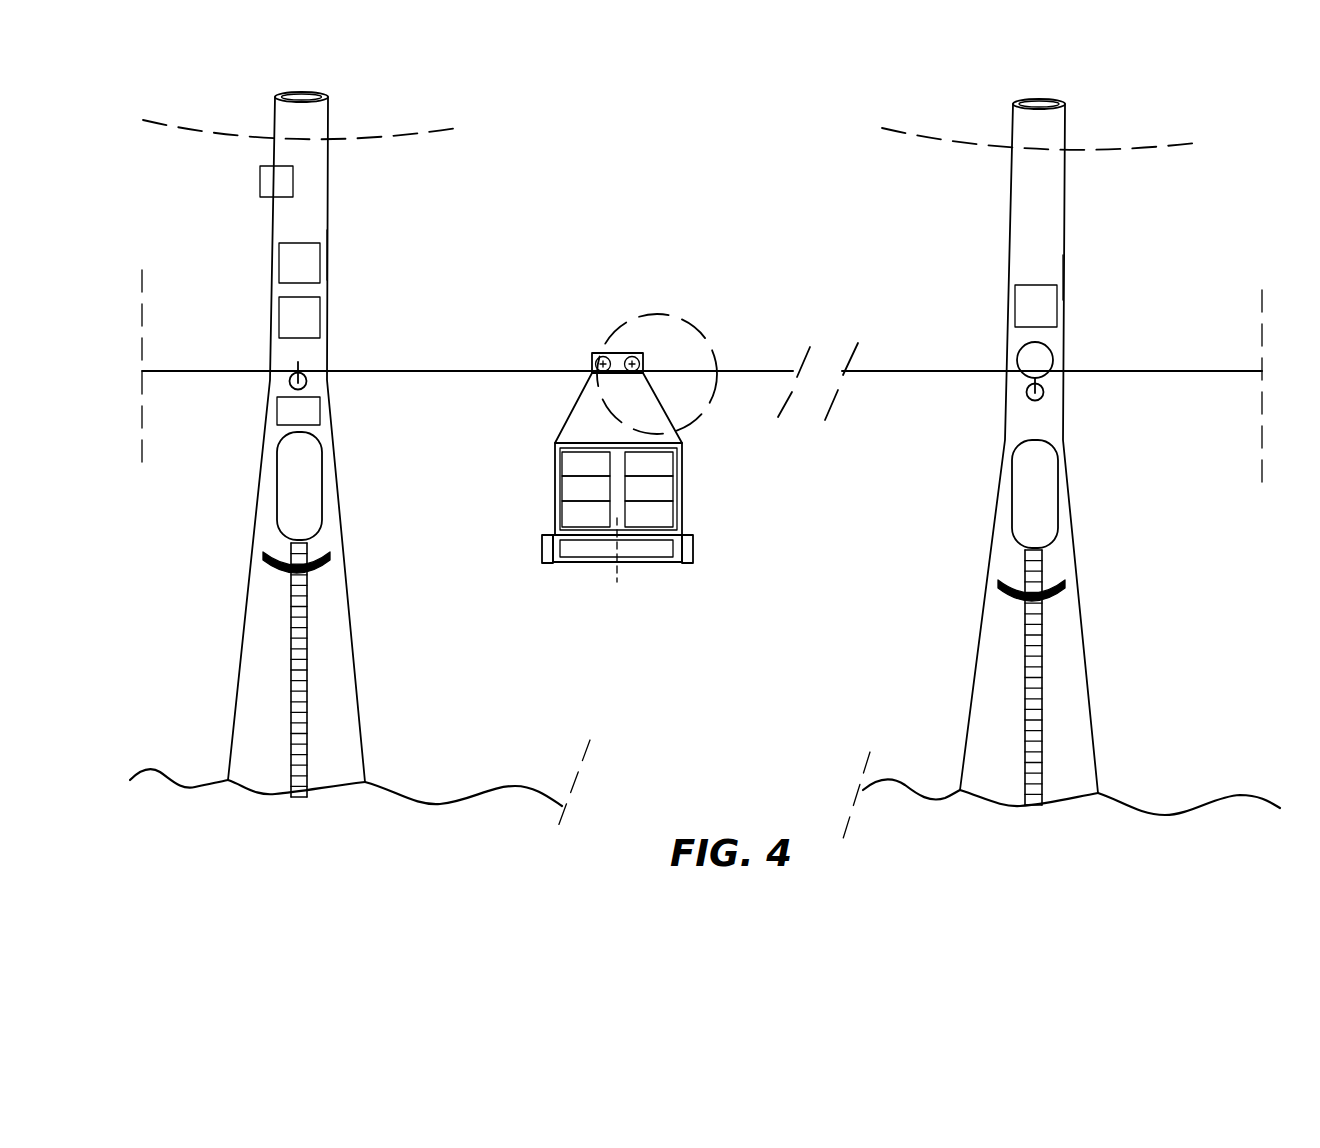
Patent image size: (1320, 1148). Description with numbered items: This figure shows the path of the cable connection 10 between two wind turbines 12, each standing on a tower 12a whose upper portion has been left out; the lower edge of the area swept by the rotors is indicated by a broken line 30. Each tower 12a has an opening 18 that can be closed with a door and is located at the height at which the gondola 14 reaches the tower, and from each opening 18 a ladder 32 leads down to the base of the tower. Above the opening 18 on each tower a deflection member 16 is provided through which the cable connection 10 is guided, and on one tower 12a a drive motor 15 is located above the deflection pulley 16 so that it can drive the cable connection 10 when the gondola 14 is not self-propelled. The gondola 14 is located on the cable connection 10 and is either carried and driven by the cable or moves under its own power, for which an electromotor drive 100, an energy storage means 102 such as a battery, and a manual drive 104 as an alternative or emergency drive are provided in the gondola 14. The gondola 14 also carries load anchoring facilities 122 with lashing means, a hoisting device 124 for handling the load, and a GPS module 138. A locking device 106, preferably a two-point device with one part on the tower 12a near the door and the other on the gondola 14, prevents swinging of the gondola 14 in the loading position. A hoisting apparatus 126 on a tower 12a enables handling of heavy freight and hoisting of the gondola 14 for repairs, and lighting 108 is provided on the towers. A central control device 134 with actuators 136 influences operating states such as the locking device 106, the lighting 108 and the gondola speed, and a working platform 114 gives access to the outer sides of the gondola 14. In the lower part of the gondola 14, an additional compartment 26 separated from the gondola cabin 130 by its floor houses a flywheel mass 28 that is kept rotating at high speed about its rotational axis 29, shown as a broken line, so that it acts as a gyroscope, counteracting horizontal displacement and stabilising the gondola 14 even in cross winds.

The cable connection 10 is at (487, 371).
The wind turbine 12 is at (358, 194).
The tower 12a is at (328, 257).
The gondola 14 is at (518, 465).
The drive motor 15 is at (1054, 361).
The deflection member 16 is at (702, 395).
The opening 18 is at (667, 490).
The additional compartment 26 is at (672, 563).
The flywheel mass 28 is at (587, 557).
The center line 29 is at (617, 566).
The broken line 30 is at (669, 129).
The ladder 32 is at (300, 731).
The electromotor drive 100 is at (586, 464).
The energy storage means 102 is at (586, 488).
The manual drive 104 is at (586, 514).
The locking device 106 is at (542, 548).
The lighting 108 is at (667, 355).
The working platform 114 is at (272, 570).
The load anchoring facilities 122 is at (649, 464).
The hoisting device 124 is at (649, 488).
The hoisting apparatus 126 is at (260, 181).
The gondola cabin 130 is at (683, 473).
The central control device 134 is at (299, 263).
The actuators 136 is at (299, 317).
The GPS module 138 is at (649, 514).